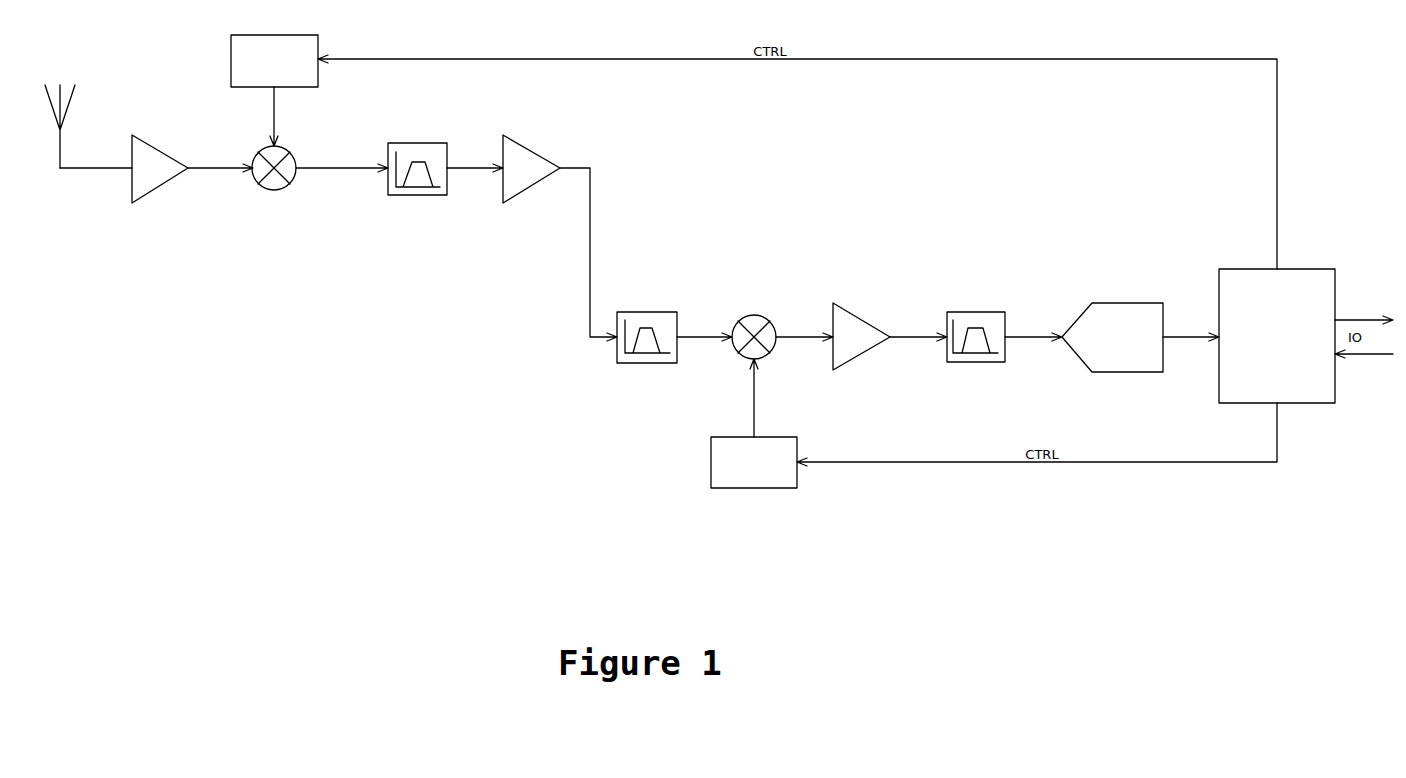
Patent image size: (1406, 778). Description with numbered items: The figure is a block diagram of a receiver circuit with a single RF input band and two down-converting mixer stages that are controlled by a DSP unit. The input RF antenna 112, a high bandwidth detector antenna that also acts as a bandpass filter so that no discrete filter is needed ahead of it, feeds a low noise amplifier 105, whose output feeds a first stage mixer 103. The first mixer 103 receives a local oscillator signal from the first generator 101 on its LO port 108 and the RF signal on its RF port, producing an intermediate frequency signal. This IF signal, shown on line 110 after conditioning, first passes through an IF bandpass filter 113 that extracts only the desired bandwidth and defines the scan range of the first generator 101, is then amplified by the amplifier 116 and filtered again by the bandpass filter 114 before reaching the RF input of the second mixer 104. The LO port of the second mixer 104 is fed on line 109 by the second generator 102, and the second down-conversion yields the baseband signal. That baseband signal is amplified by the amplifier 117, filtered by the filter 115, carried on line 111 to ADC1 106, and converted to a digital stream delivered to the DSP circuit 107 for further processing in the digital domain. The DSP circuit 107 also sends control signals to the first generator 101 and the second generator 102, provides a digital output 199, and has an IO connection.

The first generator 101 is at (289, 61).
The second generator 102 is at (769, 462).
The first stage mixer 103 is at (285, 170).
The second mixer 104 is at (765, 338).
The low noise amplifier 105 is at (160, 169).
The ADC1 106 is at (1113, 344).
The DSP circuit 107 is at (1277, 345).
The LO port 108 is at (284, 116).
The second local oscillator signal 109 is at (764, 398).
The first intermediate frequency signal 110 is at (704, 331).
The second intermediate frequency signal 111 is at (1033, 331).
The input RF antenna 112 is at (88, 126).
The IF bandpass filter 113 is at (417, 176).
The bandpass filter 114 is at (647, 345).
The filter 115 is at (976, 346).
The amplifier 116 is at (531, 169).
The amplifier 117 is at (861, 336).
The digital output 199 is at (1364, 310).